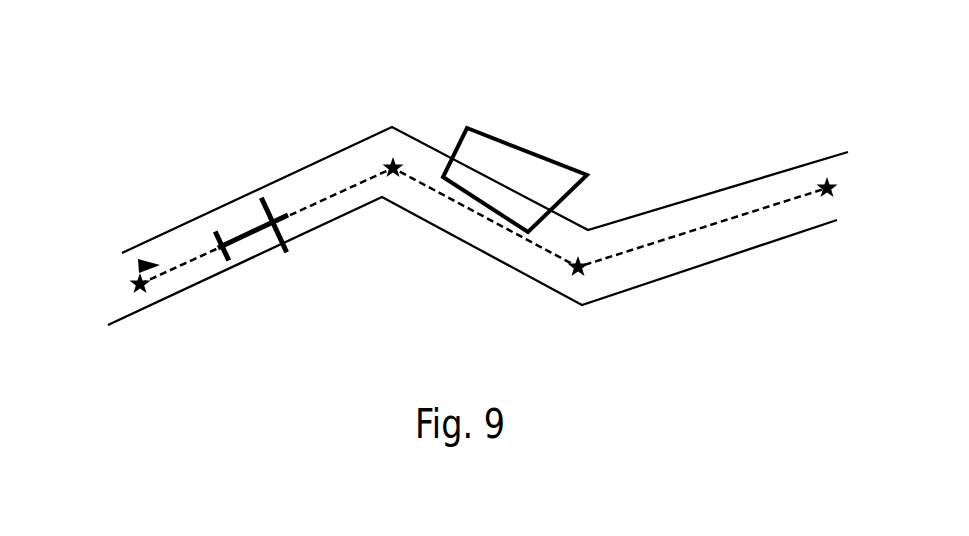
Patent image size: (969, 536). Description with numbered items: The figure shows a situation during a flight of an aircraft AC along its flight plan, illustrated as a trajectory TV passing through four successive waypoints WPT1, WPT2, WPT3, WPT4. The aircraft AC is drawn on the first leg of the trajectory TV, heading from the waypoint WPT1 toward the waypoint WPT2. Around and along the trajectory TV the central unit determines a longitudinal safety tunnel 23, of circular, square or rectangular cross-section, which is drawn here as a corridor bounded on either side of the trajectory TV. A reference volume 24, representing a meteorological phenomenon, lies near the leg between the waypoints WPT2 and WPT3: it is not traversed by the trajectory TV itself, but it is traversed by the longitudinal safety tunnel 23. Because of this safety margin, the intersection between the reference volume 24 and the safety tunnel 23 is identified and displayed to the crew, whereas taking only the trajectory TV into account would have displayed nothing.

The longitudinal safety tunnel 23 is at (315, 228).
The reference volume 24 is at (527, 148).
The trajectory TV is at (138, 266).
The aircraft AC is at (261, 238).
The waypoint WPT1 is at (141, 300).
The waypoint WPT2 is at (393, 153).
The waypoint WPT3 is at (581, 251).
The waypoint WPT4 is at (828, 172).